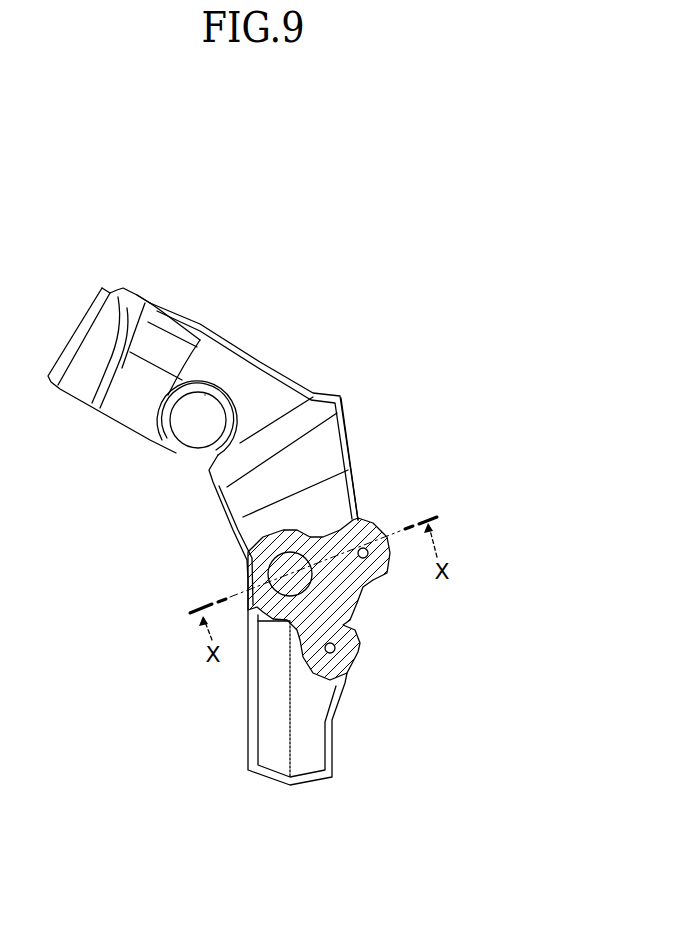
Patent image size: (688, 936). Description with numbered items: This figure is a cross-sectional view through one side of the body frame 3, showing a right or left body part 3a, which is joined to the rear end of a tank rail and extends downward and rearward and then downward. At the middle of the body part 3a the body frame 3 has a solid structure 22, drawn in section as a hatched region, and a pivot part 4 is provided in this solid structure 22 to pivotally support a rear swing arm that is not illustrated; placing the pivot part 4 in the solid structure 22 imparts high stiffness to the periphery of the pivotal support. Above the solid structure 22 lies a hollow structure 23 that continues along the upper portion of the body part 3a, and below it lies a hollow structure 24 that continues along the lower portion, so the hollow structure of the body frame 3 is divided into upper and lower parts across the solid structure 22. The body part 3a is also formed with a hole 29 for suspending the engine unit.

The body frame 3 is at (220, 330).
The body part 3a is at (353, 431).
The pivot part 4 is at (280, 565).
The solid structure 22 is at (353, 610).
The hollow structure 23 is at (243, 378).
The hollow structure 24 is at (307, 730).
The hole 29 is at (198, 437).